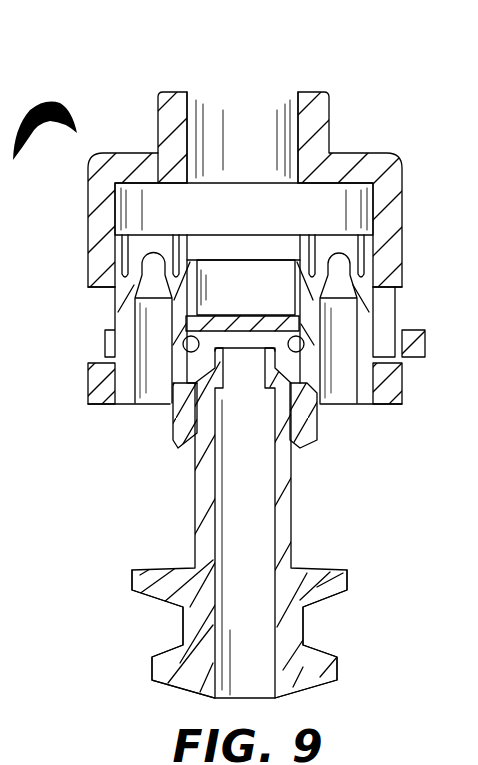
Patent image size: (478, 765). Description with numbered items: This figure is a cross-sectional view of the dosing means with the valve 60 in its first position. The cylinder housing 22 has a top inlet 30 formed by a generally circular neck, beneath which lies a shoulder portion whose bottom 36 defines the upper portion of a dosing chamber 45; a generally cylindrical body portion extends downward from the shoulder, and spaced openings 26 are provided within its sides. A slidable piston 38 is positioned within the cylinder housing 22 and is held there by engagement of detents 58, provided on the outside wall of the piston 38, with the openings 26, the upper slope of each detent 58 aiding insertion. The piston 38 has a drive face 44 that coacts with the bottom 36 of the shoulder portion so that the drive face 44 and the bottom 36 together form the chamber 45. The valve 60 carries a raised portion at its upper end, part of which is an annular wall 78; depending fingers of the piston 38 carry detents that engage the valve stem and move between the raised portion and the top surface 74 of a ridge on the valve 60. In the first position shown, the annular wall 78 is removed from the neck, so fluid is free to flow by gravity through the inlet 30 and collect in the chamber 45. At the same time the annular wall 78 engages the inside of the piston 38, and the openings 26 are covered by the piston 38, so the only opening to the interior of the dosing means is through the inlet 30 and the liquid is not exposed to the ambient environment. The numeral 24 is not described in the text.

The cylinder housing 22 is at (393, 196).
The inlet neck 24 is at (190, 103).
The openings 26 is at (103, 312).
The top inlet 30 is at (238, 100).
The bottom of the shoulder portion 36 is at (302, 195).
The piston 38 is at (308, 405).
The drive face 44 is at (318, 240).
The dosing chamber 45 is at (152, 195).
The detents 58 is at (118, 353).
The valve 60 is at (290, 695).
The top surface of ridge 74 is at (298, 578).
The annular wall 78 is at (200, 290).